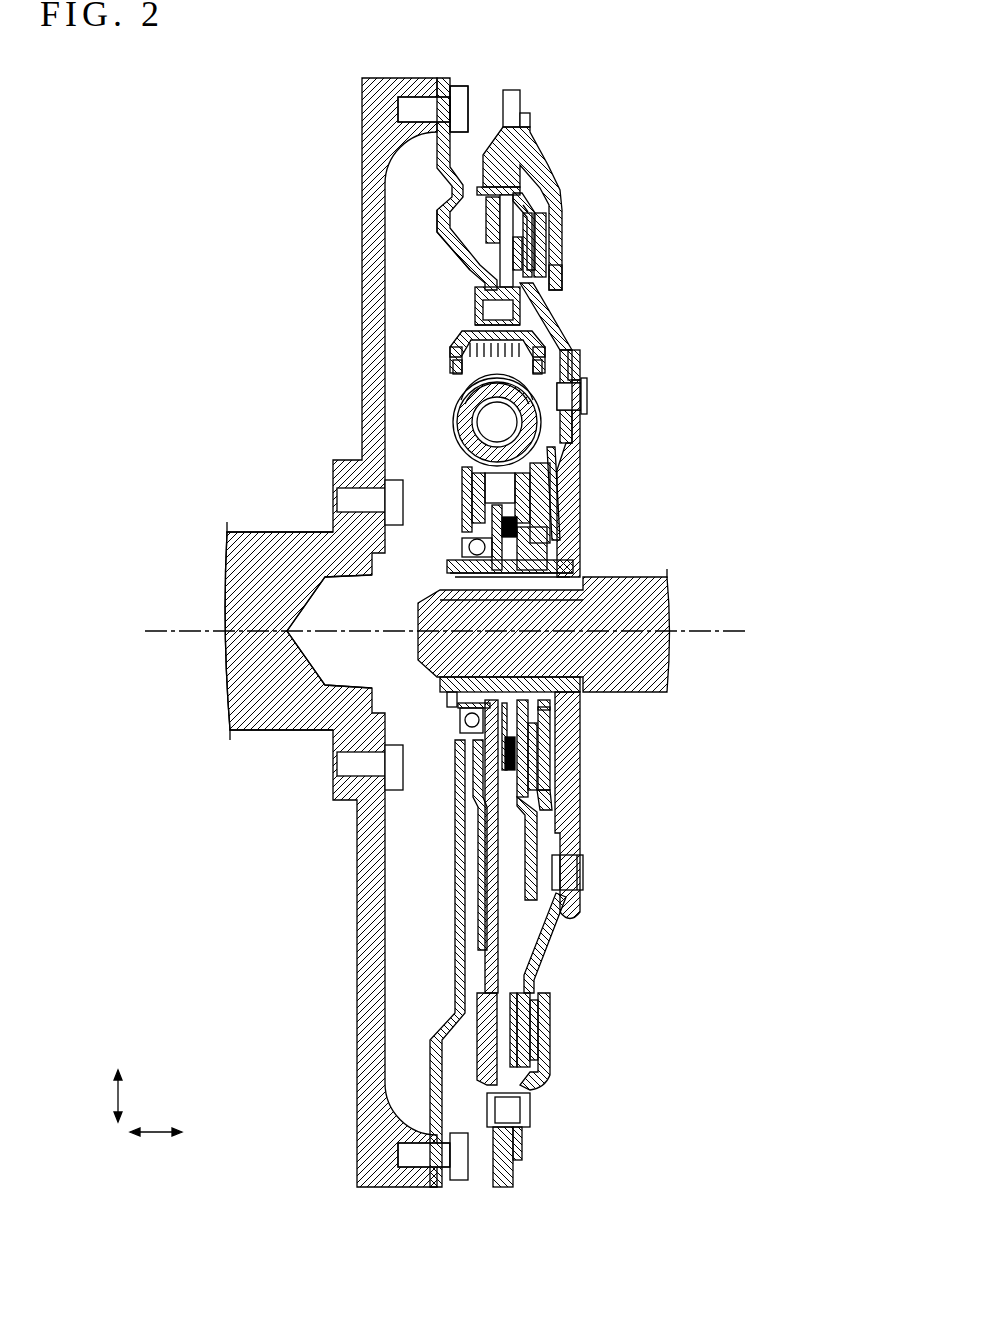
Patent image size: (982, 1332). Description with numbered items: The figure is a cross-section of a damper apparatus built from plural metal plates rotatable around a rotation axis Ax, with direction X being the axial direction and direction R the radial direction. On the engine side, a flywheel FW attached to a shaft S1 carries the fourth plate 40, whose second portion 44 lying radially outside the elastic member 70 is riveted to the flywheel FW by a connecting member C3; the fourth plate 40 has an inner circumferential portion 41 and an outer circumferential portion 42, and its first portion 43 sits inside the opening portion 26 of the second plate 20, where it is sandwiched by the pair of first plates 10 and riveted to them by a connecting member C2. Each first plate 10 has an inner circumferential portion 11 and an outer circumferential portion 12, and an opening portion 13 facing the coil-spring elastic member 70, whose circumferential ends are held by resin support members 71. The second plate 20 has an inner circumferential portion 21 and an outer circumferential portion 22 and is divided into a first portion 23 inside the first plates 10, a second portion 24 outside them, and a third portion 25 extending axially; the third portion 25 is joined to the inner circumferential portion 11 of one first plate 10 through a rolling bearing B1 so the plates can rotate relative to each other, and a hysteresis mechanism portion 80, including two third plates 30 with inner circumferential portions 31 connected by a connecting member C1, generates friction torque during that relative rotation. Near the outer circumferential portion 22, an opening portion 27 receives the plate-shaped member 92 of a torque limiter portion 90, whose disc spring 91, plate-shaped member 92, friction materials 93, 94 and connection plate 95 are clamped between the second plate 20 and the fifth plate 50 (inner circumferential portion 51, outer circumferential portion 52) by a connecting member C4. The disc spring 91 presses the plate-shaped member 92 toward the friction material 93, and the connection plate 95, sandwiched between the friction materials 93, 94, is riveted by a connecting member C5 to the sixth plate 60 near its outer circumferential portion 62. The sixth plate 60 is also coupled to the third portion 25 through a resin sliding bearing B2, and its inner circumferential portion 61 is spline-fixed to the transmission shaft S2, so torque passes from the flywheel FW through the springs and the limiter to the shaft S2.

The flywheel FW is at (380, 77).
The fourth plate 40 is at (456, 62).
The second plate 20 is at (503, 62).
The outer circumferential portion 22 is at (510, 89).
The outer circumferential portion 52 is at (528, 110).
The fifth plate 50 is at (534, 148).
The torque limiter portion 90 is at (549, 188).
The friction material 94 is at (527, 207).
The disc spring 91 is at (508, 231).
The plate-shaped member 92 is at (518, 241).
The friction material 93 is at (528, 257).
The inner circumferential portion 51 is at (552, 282).
The connection plate 95 is at (512, 307).
The connecting member C2 is at (508, 310).
The first portion 43 is at (500, 325).
The outer circumferential portion 42 is at (449, 87).
The connecting member C3 is at (419, 106).
The second portion 44 is at (437, 164).
The opening portion 27 is at (485, 184).
The second portion 24 is at (478, 217).
The opening portion 26 is at (450, 227).
The inner circumferential portion 41 is at (453, 343).
The first plate 10 is at (448, 353).
The opening portion 13 is at (453, 377).
The support member 71 is at (462, 393).
The elastic member 70 is at (460, 434).
The connecting member C1 is at (498, 490).
The third plate 30 is at (463, 500).
The first portion 23 is at (575, 467).
The hysteresis mechanism portion 80 is at (553, 537).
The bearing B1 is at (468, 548).
The third portion 25 is at (452, 562).
The sliding bearing B2 is at (487, 593).
The outer circumferential portion 62 is at (572, 346).
The connecting member C5 is at (587, 400).
The sixth plate 60 is at (570, 549).
The shaft S2 is at (647, 622).
The inner circumferential portion 61 is at (560, 603).
The shaft S1 is at (247, 556).
The rotation axis Ax is at (165, 628).
The inner circumferential portion 21 is at (478, 693).
The inner circumferential portion 11 is at (460, 720).
The inner circumferential portion 31 is at (468, 735).
The outer circumferential portion 12 is at (473, 957).
The connecting member C4 is at (530, 1117).
The direction R is at (109, 1096).
The direction X is at (156, 1145).